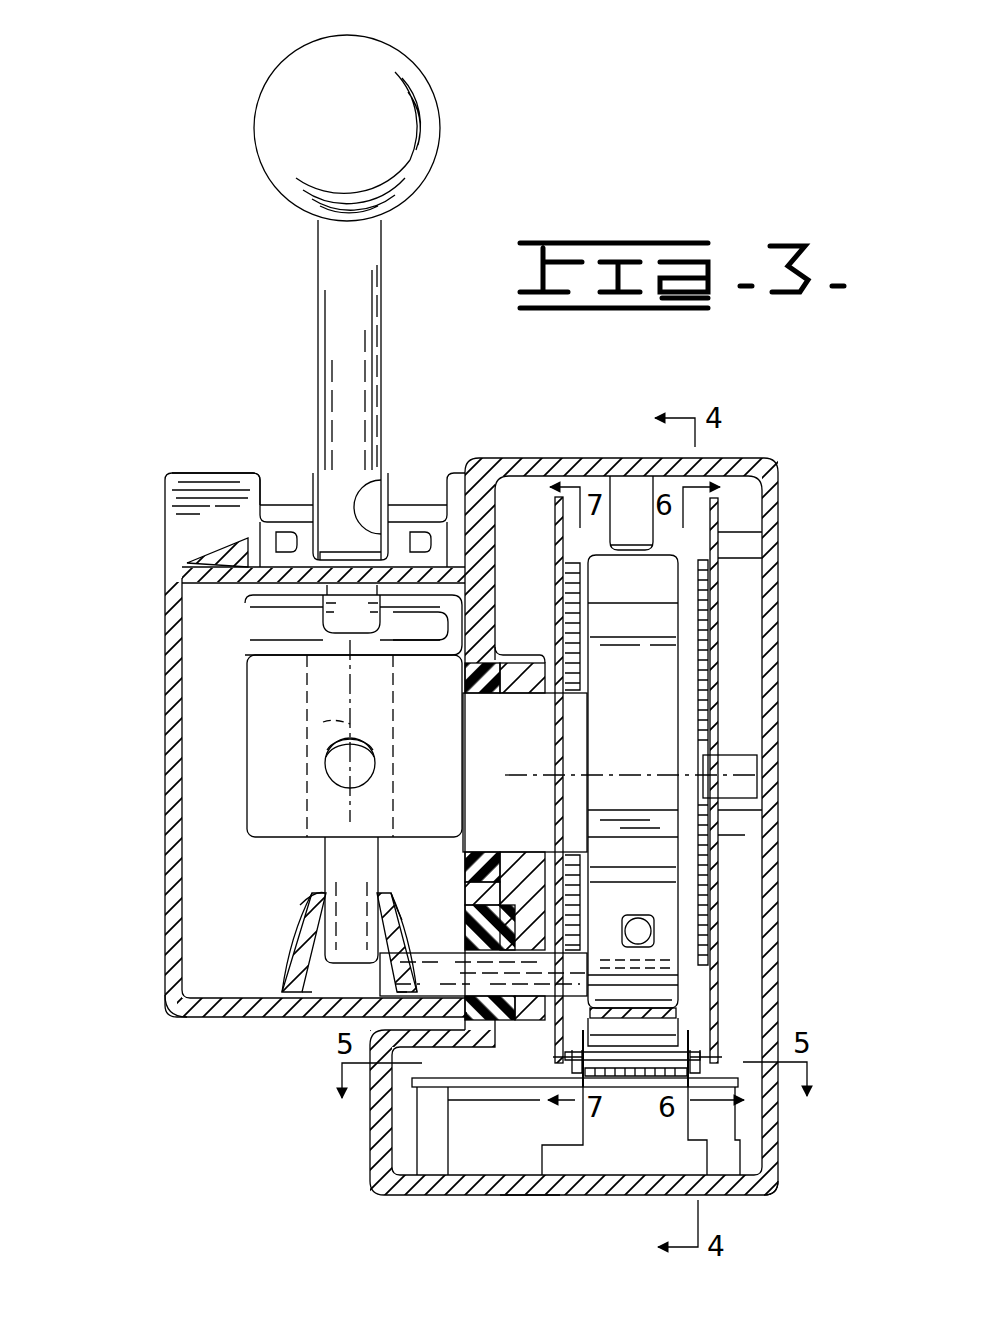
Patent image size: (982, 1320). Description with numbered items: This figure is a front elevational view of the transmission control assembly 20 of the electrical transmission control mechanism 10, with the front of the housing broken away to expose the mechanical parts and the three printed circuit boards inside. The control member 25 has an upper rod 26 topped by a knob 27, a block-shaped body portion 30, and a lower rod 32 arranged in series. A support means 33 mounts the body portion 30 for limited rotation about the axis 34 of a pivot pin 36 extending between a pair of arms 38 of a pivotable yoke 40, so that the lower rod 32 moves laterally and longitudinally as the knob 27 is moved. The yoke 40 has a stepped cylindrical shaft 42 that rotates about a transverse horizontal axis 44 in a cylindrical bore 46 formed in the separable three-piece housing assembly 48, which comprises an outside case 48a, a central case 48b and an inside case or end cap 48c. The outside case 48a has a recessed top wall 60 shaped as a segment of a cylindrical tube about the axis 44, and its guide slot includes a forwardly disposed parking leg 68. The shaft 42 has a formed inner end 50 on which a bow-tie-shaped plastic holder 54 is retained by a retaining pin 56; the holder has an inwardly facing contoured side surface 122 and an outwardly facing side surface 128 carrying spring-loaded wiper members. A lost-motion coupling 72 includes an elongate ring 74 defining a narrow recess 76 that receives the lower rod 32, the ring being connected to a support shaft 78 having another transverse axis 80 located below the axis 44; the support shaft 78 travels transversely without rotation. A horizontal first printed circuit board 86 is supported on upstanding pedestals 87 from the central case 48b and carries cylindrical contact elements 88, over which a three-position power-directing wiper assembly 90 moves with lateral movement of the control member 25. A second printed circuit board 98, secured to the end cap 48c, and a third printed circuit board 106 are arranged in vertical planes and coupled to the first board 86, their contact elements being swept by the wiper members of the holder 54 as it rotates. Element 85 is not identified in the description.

The electrical transmission control mechanism 10 is at (148, 356).
The transmission control assembly 20 is at (158, 532).
The control member 25 is at (310, 244).
The upper rod 26 is at (345, 310).
The knob 27 is at (296, 78).
The body portion 30 is at (320, 622).
The lower rod 32 is at (340, 850).
The support means 33 is at (240, 700).
The axis 34 is at (322, 724).
The pivot pin 36 is at (338, 778).
The arms 38 is at (293, 694).
The yoke 40 is at (240, 822).
The stepped cylindrical shaft 42 is at (542, 752).
The transverse horizontal axis 44 is at (532, 782).
The cylindrical bore 46 is at (548, 655).
The housing assembly 48 is at (372, 1147).
The outside case 48a is at (175, 1005).
The central case 48b is at (505, 1193).
The end cap 48c is at (768, 1186).
The formed inner end 50 is at (705, 740).
The holder 54 is at (690, 593).
The retaining pin 56 is at (700, 730).
The recessed top wall 60 is at (262, 492).
The parking leg 68 is at (380, 495).
The lost-motion coupling 72 is at (288, 925).
The elongate ring 74 is at (295, 960).
The recess 76 is at (312, 995).
The support shaft 78 is at (458, 950).
The transverse axis 80 is at (385, 974).
The connector 85 is at (572, 1122).
The first printed circuit board 86 is at (497, 1090).
The pedestals 87 is at (427, 1101).
The contact elements 88 is at (622, 1090).
The wiper assembly 90 is at (692, 1030).
The second printed circuit board 98 is at (722, 510).
The third printed circuit board 106 is at (546, 511).
The contoured side surface 122 is at (700, 893).
The outwardly facing side surface 128 is at (578, 880).